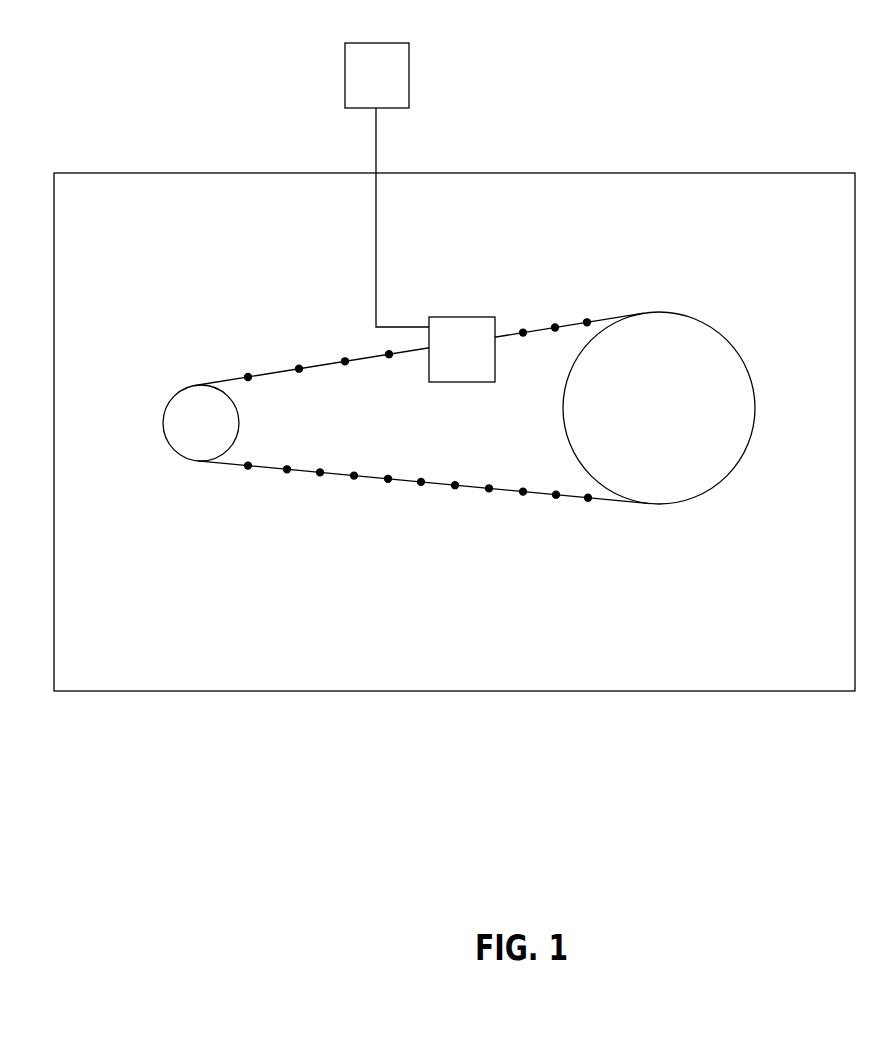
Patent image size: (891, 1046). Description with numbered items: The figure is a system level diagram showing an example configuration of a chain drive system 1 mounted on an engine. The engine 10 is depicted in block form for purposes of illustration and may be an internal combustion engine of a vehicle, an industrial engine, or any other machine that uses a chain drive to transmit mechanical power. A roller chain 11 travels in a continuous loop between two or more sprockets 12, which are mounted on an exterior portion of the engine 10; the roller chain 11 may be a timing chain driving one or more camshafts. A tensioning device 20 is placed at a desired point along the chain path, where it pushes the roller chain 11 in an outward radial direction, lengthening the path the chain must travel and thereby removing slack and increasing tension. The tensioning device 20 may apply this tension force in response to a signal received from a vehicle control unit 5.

The chain drive system 1 is at (138, 262).
The vehicle control unit 5 is at (409, 78).
The engine 10 is at (800, 173).
The roller chain 11 is at (573, 321).
The sprockets 12 is at (192, 437).
The tensioning device 20 is at (462, 317).